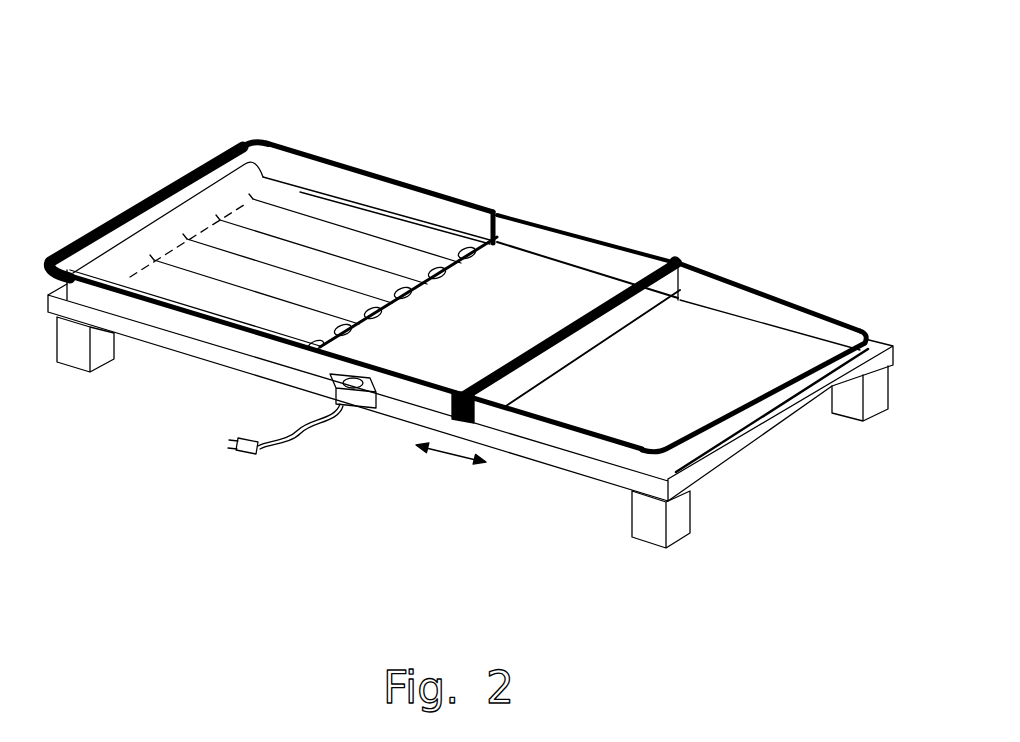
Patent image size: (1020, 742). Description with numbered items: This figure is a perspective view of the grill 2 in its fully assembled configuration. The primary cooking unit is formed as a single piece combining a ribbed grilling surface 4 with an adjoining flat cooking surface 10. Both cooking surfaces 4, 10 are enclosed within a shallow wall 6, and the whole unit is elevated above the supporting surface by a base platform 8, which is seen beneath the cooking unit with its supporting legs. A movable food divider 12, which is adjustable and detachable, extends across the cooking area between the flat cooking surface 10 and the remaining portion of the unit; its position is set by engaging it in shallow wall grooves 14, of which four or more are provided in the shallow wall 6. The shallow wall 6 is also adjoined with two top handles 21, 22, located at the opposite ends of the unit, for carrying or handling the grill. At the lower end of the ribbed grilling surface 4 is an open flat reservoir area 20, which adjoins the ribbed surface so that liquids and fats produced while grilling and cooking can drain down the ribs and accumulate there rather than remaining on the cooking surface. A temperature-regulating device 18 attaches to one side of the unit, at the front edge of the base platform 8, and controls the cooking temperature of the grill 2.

The grill 2 is at (625, 103).
The ribbed grilling surface 4 is at (395, 237).
The shallow wall 6 is at (560, 438).
The base platform 8 is at (157, 342).
The flat cooking surface 10 is at (507, 277).
The food divider 12 is at (668, 280).
The shallow wall grooves 14 is at (757, 289).
The temperature-regulating device 18 is at (347, 398).
The open flat reservoir area 20 is at (248, 192).
The top handle 21 is at (866, 328).
The top handle 22 is at (158, 188).